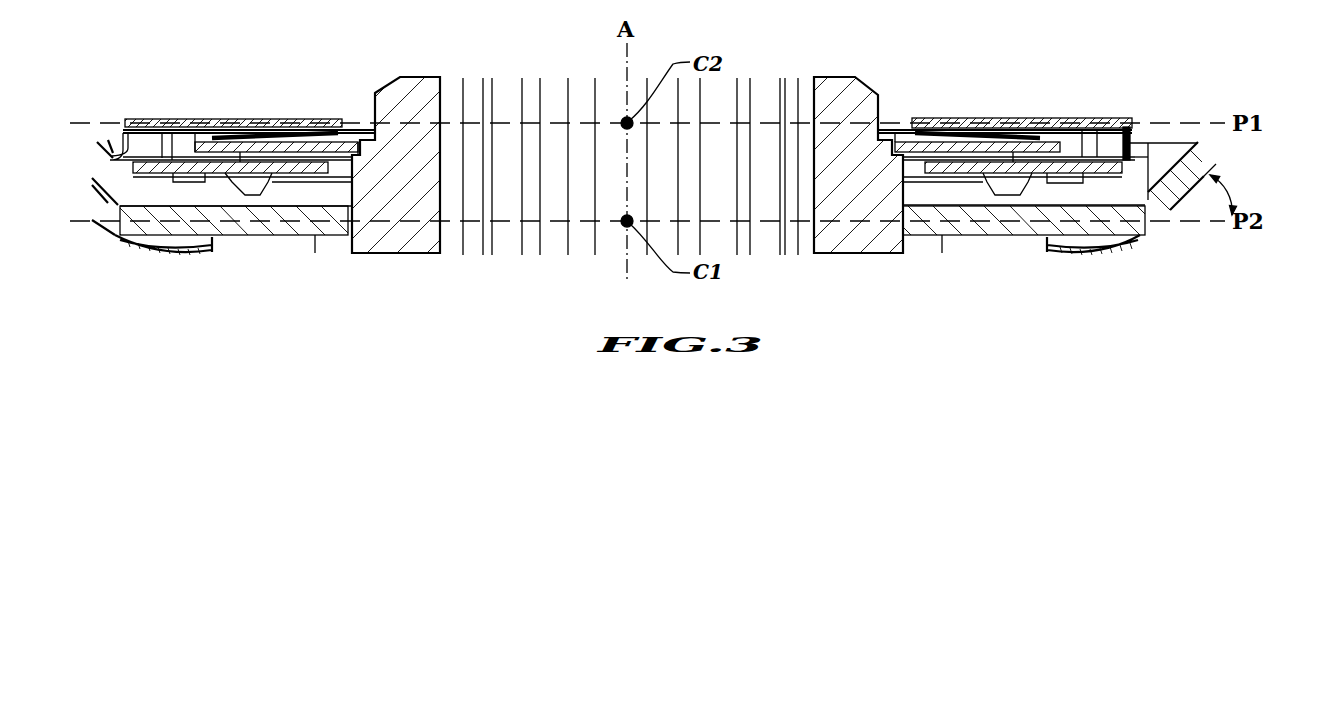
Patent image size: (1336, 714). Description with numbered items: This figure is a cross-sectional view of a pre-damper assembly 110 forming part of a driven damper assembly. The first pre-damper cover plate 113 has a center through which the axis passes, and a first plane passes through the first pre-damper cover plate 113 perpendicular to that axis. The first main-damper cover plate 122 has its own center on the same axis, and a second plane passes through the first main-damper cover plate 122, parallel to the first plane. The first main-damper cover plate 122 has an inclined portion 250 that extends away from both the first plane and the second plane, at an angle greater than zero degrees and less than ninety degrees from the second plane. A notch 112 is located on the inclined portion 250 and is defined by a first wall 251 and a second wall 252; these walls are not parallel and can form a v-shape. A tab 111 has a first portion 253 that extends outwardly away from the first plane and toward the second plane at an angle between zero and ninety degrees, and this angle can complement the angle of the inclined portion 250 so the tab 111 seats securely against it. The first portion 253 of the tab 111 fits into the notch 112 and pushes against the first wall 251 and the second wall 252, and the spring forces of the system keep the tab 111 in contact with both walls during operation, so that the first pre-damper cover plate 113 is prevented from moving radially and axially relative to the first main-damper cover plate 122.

The pre-damper assembly 110 is at (1262, 97).
The tab 111 is at (1137, 160).
The notch 112 is at (1148, 192).
The first pre-damper cover plate 113 is at (970, 124).
The first main-damper cover plate 122 is at (972, 222).
The inclined portion 250 is at (1165, 192).
The first wall 251 is at (1130, 162).
The second wall 252 is at (1147, 158).
The first portion 253 is at (1075, 130).